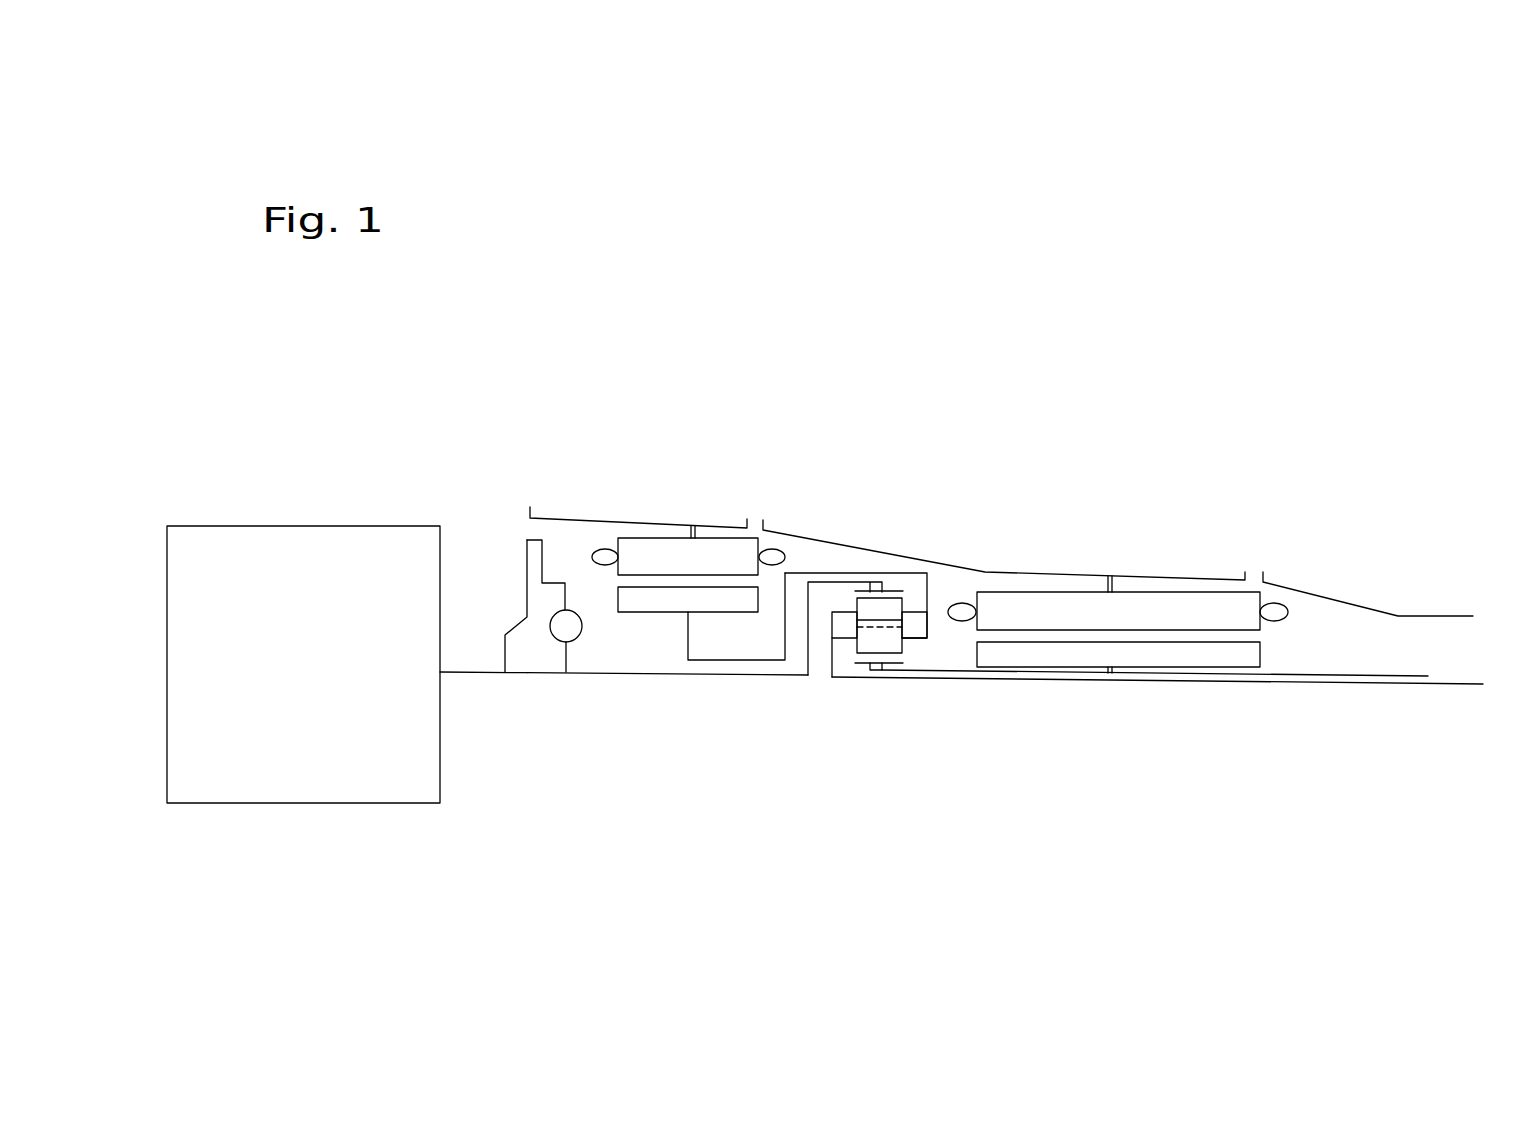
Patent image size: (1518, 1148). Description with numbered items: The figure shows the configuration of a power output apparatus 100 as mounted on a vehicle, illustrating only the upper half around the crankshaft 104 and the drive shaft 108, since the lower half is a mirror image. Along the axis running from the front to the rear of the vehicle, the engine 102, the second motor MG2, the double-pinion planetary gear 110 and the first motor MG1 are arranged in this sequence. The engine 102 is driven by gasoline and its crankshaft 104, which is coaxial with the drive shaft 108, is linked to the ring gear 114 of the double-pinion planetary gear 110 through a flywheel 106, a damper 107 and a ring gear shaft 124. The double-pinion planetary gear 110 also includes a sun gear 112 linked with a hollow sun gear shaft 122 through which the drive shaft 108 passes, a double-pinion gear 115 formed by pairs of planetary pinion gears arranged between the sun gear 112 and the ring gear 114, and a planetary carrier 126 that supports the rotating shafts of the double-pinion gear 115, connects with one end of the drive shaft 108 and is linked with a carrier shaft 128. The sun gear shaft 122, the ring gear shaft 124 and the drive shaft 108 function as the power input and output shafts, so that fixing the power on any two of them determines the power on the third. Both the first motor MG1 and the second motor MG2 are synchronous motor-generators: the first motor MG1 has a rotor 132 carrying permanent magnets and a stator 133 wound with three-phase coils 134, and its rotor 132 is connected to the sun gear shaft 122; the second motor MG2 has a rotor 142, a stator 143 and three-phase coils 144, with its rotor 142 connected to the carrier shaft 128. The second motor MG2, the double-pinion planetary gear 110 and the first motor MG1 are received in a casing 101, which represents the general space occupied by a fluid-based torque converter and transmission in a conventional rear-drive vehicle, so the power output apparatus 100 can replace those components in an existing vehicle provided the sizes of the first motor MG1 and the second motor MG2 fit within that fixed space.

The power output apparatus 100 is at (1053, 383).
The casing 101 is at (1308, 590).
The engine 102 is at (290, 526).
The crankshaft 104 is at (480, 672).
The flywheel 106 is at (527, 543).
The damper 107 is at (570, 612).
The drive shaft 108 is at (1460, 685).
The double-pinion planetary gear 110 is at (903, 527).
The sun gear 112 is at (873, 667).
The ring gear 114 is at (873, 582).
The double-pinion gear 115 is at (903, 642).
The sun gear shaft 122 is at (1320, 677).
The ring gear shaft 124 is at (655, 676).
The planetary carrier 126 is at (832, 653).
The carrier shaft 128 is at (733, 676).
The rotor 132 is at (1173, 652).
The stator 133 is at (1052, 605).
The three-phase coils 134 is at (965, 603).
The rotor 142 is at (733, 598).
The stator 143 is at (697, 555).
The three-phase coils 144 is at (605, 550).
The first motor MG1 is at (1142, 527).
The second motor MG2 is at (687, 495).